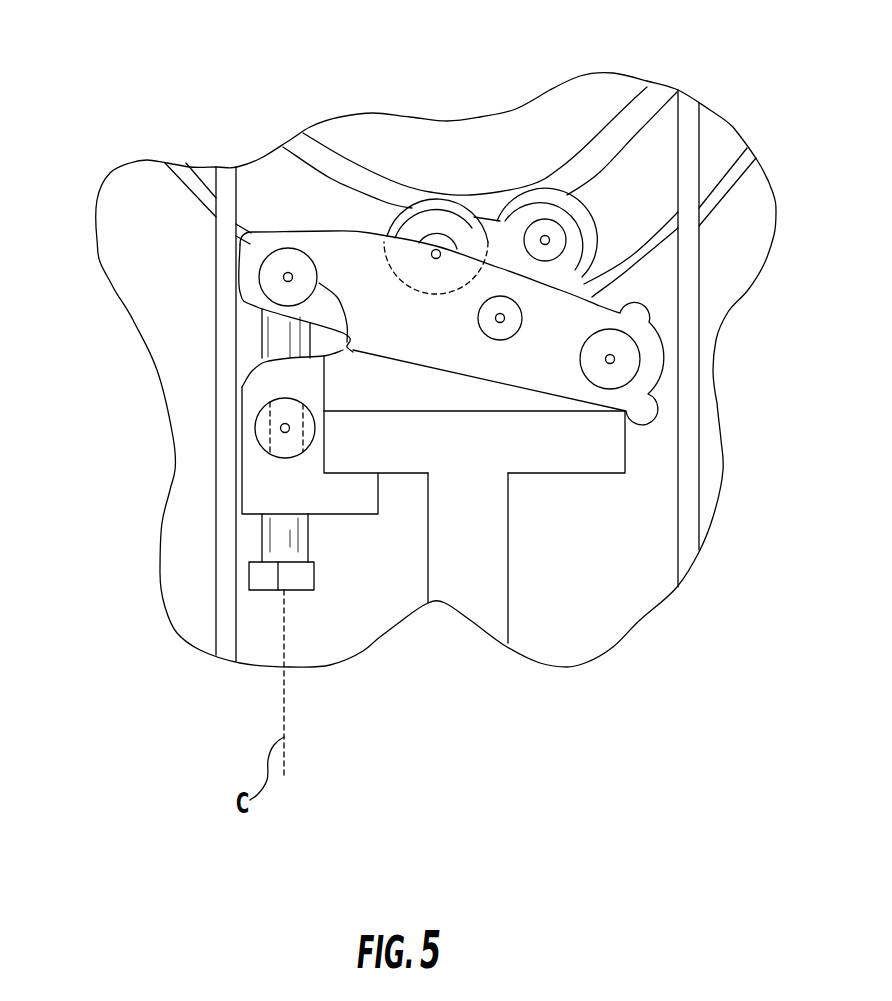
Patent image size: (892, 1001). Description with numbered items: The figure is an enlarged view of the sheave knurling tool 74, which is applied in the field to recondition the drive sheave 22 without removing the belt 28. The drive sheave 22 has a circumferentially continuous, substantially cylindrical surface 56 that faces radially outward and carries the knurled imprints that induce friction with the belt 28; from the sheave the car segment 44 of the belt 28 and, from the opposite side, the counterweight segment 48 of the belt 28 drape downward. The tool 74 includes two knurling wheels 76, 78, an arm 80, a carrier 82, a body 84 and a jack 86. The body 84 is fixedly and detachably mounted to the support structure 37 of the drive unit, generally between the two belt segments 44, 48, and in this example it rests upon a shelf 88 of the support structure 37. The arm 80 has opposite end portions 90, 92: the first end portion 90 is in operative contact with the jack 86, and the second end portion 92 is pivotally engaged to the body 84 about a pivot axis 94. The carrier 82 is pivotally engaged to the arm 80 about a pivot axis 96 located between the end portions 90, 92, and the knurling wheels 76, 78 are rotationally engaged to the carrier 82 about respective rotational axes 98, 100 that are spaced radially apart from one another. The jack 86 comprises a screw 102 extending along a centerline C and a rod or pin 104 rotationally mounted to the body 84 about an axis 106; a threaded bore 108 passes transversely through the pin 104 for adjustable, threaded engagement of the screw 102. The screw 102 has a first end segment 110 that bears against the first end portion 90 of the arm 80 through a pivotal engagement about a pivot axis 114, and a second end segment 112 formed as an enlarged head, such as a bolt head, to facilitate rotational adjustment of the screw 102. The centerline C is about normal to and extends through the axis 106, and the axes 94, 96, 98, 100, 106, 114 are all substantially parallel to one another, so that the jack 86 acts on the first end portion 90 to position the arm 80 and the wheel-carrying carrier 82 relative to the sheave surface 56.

The drive sheave 22 is at (320, 118).
The belt 28 is at (706, 258).
The support structure 37 is at (478, 563).
The car segment 44 is at (692, 498).
The counterweight segment 48 is at (233, 640).
The surface 56 is at (640, 151).
The sheave knurling tool 74 is at (484, 95).
The knurling wheel 76 is at (413, 206).
The knurling wheel 78 is at (558, 212).
The arm 80 is at (348, 225).
The carrier 82 is at (503, 243).
The body 84 is at (348, 490).
The jack 86 is at (295, 604).
The shelf 88 is at (396, 399).
The first end portion 90 is at (328, 248).
The second end portion 92 is at (590, 322).
The pivot axis 94 is at (615, 359).
The pivot axis 96 is at (500, 323).
The rotational axis 98 is at (436, 259).
The rotational axis 100 is at (545, 245).
The screw 102 is at (257, 538).
The pin 104 is at (287, 453).
The axis 106 is at (285, 427).
The threaded bore 108 is at (273, 462).
The first end segment 110 is at (290, 333).
The second end segment 112 is at (303, 578).
The pivot axis 114 is at (287, 277).